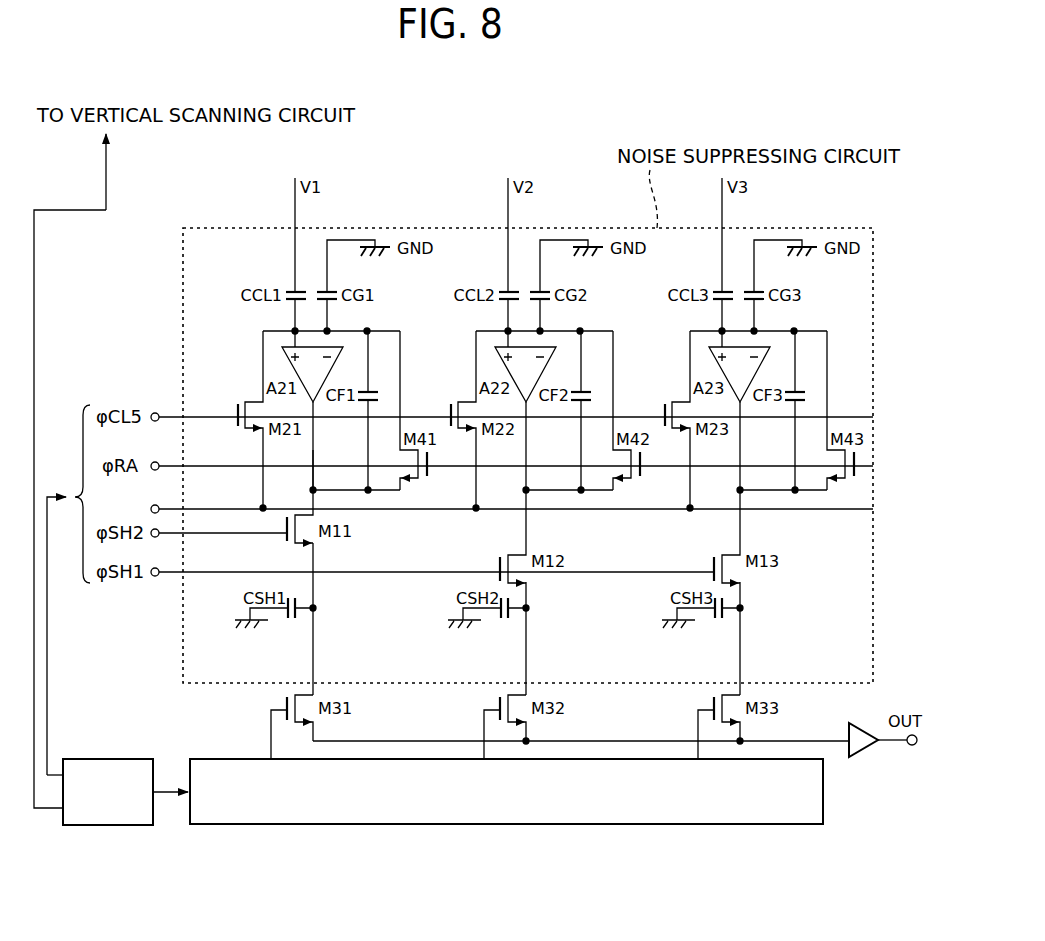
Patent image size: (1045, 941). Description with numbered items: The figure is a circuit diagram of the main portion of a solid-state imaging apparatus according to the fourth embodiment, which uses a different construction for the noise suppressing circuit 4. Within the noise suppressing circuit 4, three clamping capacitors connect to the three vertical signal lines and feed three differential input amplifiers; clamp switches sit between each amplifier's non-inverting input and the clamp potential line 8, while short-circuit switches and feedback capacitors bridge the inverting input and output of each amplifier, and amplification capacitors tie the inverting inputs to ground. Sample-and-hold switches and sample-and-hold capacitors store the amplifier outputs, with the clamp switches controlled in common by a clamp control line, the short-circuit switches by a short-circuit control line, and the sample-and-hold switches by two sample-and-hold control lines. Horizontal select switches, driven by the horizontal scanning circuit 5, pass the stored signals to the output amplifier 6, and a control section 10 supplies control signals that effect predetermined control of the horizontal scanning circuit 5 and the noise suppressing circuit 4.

The noise suppressing circuit 4 is at (215, 228).
The horizontal scanning circuit 5 is at (295, 825).
The output amplifier 6 is at (860, 753).
The clamp potential line 8 is at (496, 509).
The control section 10 is at (108, 825).